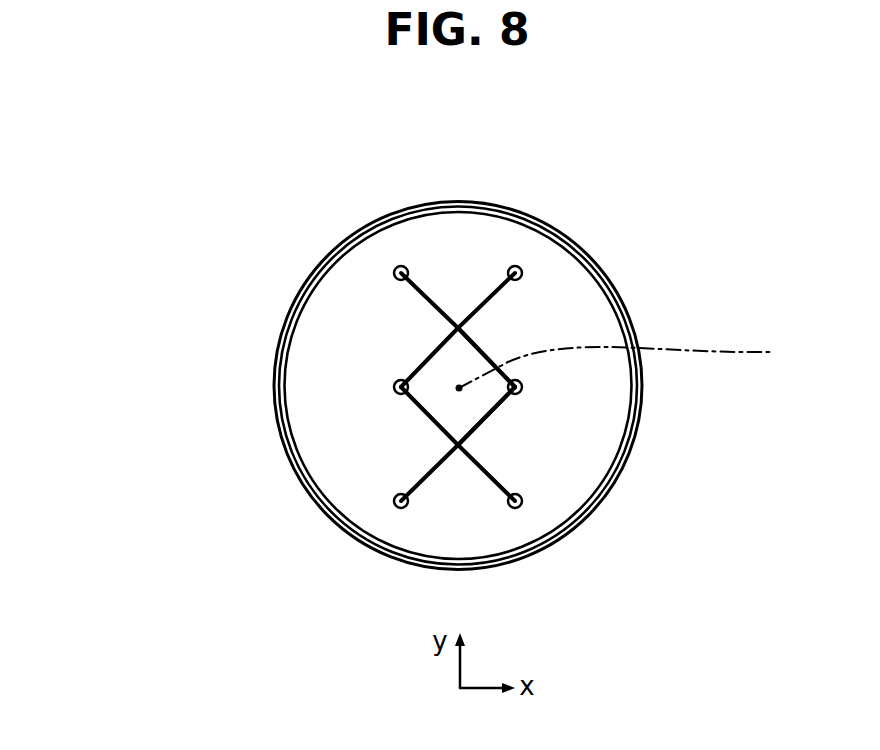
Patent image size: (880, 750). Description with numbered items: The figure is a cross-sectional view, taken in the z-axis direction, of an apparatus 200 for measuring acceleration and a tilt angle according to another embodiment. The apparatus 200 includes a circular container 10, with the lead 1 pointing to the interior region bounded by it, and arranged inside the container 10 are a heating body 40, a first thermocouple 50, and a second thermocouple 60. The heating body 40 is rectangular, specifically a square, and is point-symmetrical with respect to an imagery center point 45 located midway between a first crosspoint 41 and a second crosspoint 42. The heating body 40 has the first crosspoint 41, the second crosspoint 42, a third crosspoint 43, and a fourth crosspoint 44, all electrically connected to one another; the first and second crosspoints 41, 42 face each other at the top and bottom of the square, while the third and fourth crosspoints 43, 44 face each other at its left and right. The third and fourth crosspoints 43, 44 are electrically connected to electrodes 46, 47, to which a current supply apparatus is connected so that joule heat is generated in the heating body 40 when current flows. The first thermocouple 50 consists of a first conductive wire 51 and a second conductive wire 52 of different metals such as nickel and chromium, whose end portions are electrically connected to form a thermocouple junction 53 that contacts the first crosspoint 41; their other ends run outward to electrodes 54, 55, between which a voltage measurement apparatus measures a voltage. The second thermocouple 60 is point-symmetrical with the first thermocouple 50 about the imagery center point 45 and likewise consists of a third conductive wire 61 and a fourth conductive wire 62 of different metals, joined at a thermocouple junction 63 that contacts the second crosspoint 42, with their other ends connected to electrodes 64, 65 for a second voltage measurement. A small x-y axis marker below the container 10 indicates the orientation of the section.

The apparatus for measuring acceleration and a tilt angle 200 is at (238, 161).
The wafer 1 is at (450, 250).
The container 10 is at (488, 204).
The heating body 40 is at (402, 361).
The first crosspoint 41 is at (462, 329).
The second crosspoint 42 is at (462, 444).
The third crosspoint 43 is at (401, 394).
The fourth crosspoint 44 is at (522, 389).
The imagery center point 45 is at (634, 366).
The electrode 46 is at (394, 390).
The electrode 47 is at (522, 385).
The first thermocouple 50 is at (482, 270).
The first conductive wire 51 is at (437, 309).
The second conductive wire 52 is at (492, 296).
The thermocouple junction 53 is at (610, 349).
The electrode 54 is at (394, 268).
The electrode 55 is at (515, 266).
The second thermocouple 60 is at (487, 496).
The third conductive wire 61 is at (433, 468).
The fourth conductive wire 62 is at (486, 470).
The thermocouple junction 63 is at (610, 425).
The electrode 64 is at (402, 509).
The electrode 65 is at (518, 509).